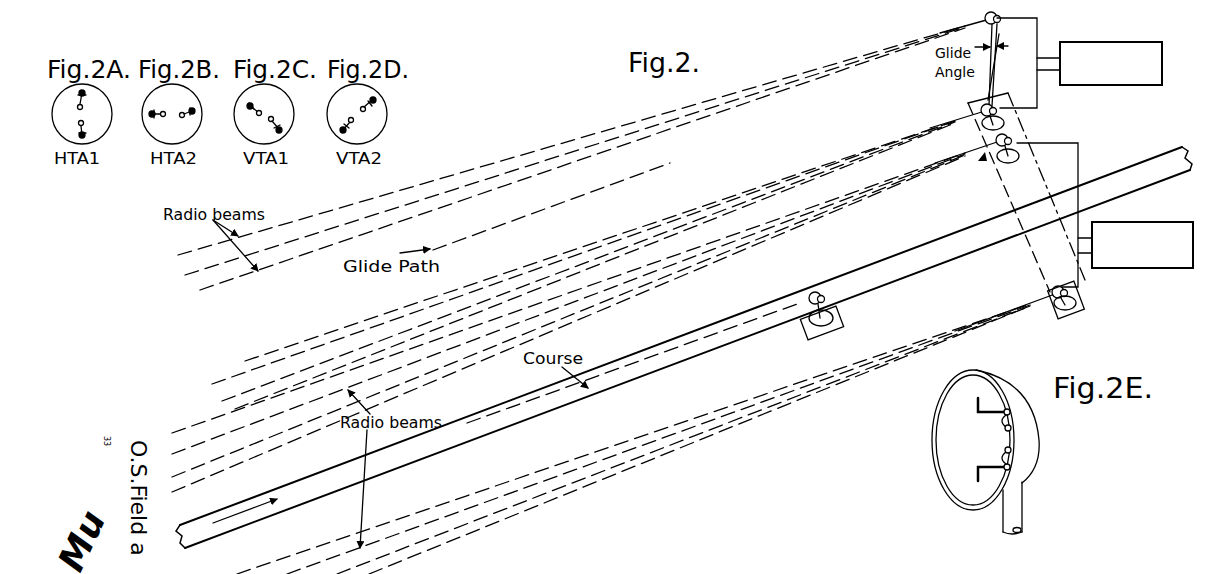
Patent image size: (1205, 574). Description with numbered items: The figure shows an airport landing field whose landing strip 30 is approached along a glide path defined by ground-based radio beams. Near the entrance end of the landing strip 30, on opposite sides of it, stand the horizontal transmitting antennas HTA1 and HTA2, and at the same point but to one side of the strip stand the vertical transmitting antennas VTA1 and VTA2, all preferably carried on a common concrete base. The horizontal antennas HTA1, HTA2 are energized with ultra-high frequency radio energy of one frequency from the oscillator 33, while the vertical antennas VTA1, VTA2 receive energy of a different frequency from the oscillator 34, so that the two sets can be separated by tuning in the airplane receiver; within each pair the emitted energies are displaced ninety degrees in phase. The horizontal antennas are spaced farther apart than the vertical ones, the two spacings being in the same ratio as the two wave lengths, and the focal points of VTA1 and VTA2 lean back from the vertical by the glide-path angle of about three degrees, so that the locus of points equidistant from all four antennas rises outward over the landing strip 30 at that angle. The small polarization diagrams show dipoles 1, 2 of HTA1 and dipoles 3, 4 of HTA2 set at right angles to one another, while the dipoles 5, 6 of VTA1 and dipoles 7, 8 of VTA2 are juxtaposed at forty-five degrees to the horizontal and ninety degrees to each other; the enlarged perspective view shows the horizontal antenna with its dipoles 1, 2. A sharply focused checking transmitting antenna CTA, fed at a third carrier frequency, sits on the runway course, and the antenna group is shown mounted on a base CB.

In FIG. 2A, the dipole 1 is at (75, 101).
In FIG. 2E, the dipole 1 is at (975, 405).
In FIG. 2A, the dipole 2 is at (88, 130).
In FIG. 2E, the dipole 2 is at (975, 470).
In FIG. 2B, the dipole 3 is at (157, 107).
In FIG. 2B, the dipole 4 is at (187, 122).
In FIG. 2C, the dipole 5 is at (260, 106).
In FIG. 2C, the dipole 6 is at (269, 127).
In FIG. 2D, the dipole 7 is at (352, 128).
In FIG. 2D, the dipole 8 is at (360, 104).
In FIG. 2, the landing strip 30 is at (760, 312).
In FIG. 2, the oscillator 33 is at (1152, 223).
In FIG. 2, the oscillator 34 is at (1093, 43).
In FIG. 2, the horizontal transmitting antenna HTA1 is at (1022, 142).
In FIG. 2E, the horizontal transmitting antenna HTA1 is at (935, 421).
In FIG. 2, the horizontal transmitting antenna HTA2 is at (1060, 287).
In FIG. 2, the vertical transmitting antenna VTA1 is at (1004, 110).
In FIG. 2, the vertical transmitting antenna VTA2 is at (1011, 26).
In FIG. 2, the checking transmitting antenna CTA is at (815, 292).
In FIG. 2, the control box CB is at (1084, 303).